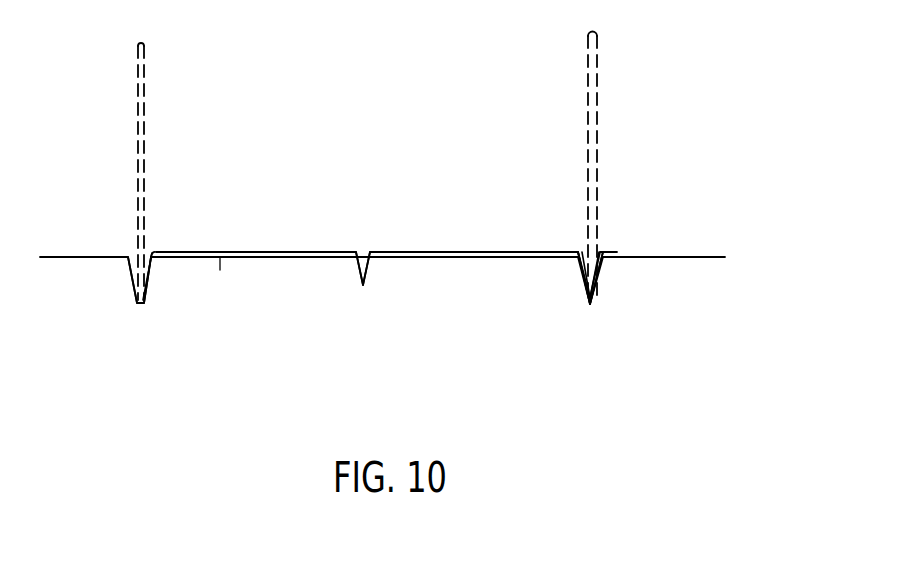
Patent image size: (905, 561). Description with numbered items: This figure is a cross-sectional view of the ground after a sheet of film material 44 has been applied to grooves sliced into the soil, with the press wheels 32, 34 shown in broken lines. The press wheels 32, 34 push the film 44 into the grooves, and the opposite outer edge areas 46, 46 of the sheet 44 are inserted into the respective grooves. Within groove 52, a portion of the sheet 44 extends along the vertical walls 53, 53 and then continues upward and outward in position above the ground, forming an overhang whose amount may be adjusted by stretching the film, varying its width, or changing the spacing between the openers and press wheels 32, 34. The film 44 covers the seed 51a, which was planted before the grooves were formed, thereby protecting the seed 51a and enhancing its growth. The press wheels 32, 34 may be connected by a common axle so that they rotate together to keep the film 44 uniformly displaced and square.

The press wheel 32 is at (144, 68).
The press wheel 34 is at (598, 68).
The sheet of film material 44 is at (272, 252).
The outer edge area 46 is at (173, 224).
The seed 51a is at (357, 287).
The groove 52 is at (572, 281).
The vertical wall 53 is at (598, 281).